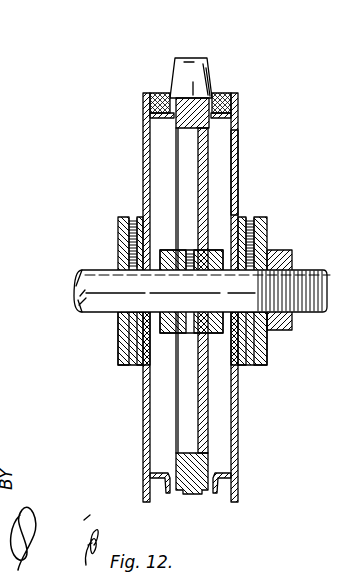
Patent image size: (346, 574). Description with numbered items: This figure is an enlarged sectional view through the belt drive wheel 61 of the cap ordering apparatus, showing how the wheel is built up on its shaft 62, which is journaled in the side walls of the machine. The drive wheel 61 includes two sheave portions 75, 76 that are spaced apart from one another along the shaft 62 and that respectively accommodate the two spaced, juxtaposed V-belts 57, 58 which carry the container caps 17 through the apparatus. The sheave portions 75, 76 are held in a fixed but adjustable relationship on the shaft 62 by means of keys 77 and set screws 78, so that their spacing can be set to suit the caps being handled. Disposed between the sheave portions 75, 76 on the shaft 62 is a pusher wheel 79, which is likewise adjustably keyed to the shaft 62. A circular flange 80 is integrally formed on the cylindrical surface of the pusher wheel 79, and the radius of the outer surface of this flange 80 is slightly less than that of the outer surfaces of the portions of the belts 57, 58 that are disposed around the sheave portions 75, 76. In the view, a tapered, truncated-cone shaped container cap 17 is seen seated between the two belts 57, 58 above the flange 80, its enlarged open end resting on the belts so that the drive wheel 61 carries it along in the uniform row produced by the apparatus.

The container cap 17 is at (207, 65).
The V-belt 57 is at (223, 92).
The V-belt 58 is at (165, 93).
The drive wheel 61 is at (133, 152).
The shaft 62 is at (82, 285).
The sheave portion 75 is at (145, 185).
The sheave portion 76 is at (238, 180).
The key 77 is at (118, 256).
The set screw 78 is at (118, 227).
The pusher wheel 79 is at (200, 138).
The circular flange 80 is at (185, 120).